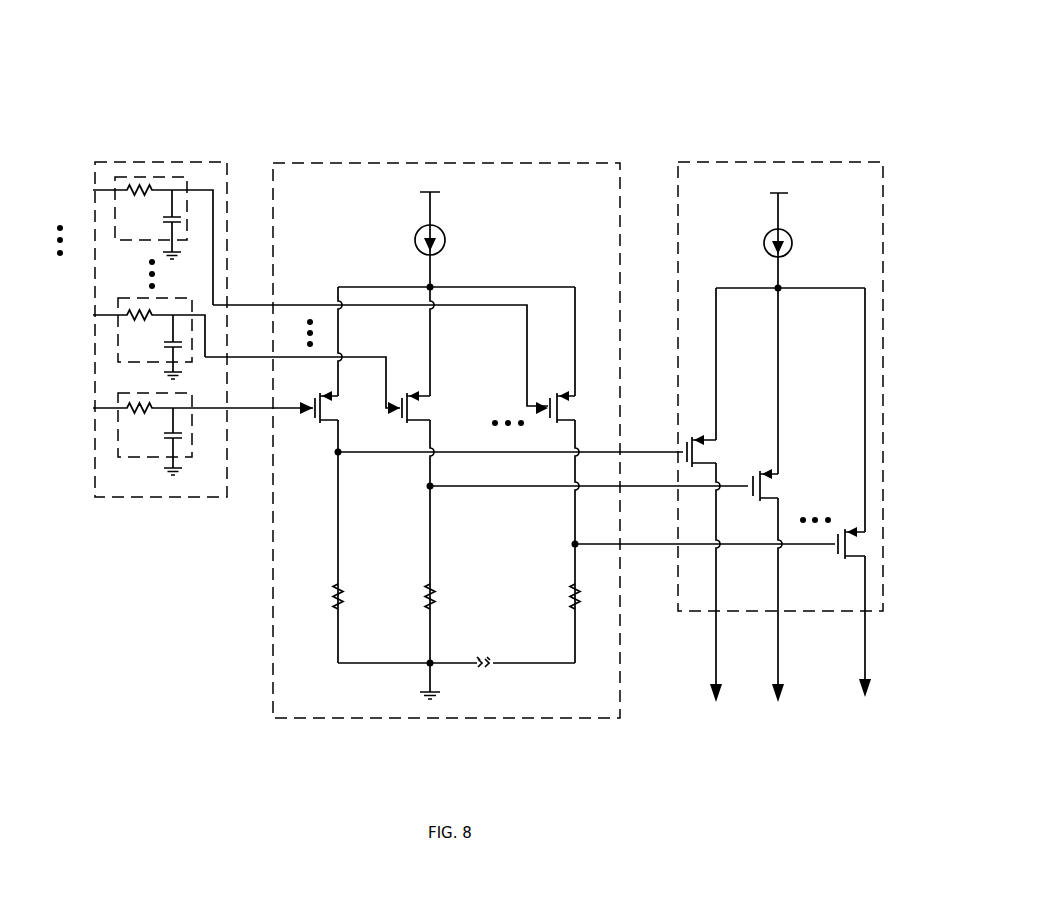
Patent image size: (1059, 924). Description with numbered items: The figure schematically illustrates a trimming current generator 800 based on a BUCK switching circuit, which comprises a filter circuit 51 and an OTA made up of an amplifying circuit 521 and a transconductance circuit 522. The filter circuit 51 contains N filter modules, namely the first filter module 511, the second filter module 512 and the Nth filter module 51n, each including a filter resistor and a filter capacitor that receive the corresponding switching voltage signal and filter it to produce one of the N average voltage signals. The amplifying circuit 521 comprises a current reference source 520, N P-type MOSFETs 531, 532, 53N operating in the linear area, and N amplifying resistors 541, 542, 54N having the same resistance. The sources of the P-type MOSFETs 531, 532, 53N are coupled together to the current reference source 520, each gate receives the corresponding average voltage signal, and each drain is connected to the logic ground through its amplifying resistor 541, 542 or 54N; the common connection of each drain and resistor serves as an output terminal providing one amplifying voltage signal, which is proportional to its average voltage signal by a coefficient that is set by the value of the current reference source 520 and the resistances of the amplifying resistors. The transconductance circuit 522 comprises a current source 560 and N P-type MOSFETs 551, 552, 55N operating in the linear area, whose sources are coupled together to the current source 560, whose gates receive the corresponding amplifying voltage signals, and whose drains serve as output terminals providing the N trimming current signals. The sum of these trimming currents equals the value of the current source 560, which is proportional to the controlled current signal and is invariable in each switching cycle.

The trimming current generator 800 is at (757, 65).
The filter circuit 51 is at (180, 162).
The Nth filter module 51n is at (146, 242).
The second filter module 512 is at (152, 361).
The first filter module 511 is at (152, 458).
The amplifying circuit 521 is at (433, 162).
The current reference source 520 is at (446, 232).
The first P-type MOSFET of amplifying circuit 531 is at (343, 401).
The second P-type MOSFET of amplifying circuit 532 is at (432, 401).
The Nth P-type MOSFET of amplifying circuit 53N is at (578, 400).
The first amplifying resistor 541 is at (346, 599).
The second amplifying resistor 542 is at (438, 599).
The Nth amplifying resistor 54N is at (583, 599).
The transconductance circuit 522 is at (775, 162).
The current source 560 is at (794, 237).
The first P-type MOSFET of transconductance circuit 551 is at (718, 446).
The second P-type MOSFET of transconductance circuit 552 is at (782, 484).
The Nth P-type MOSFET of transconductance circuit 55N is at (855, 568).